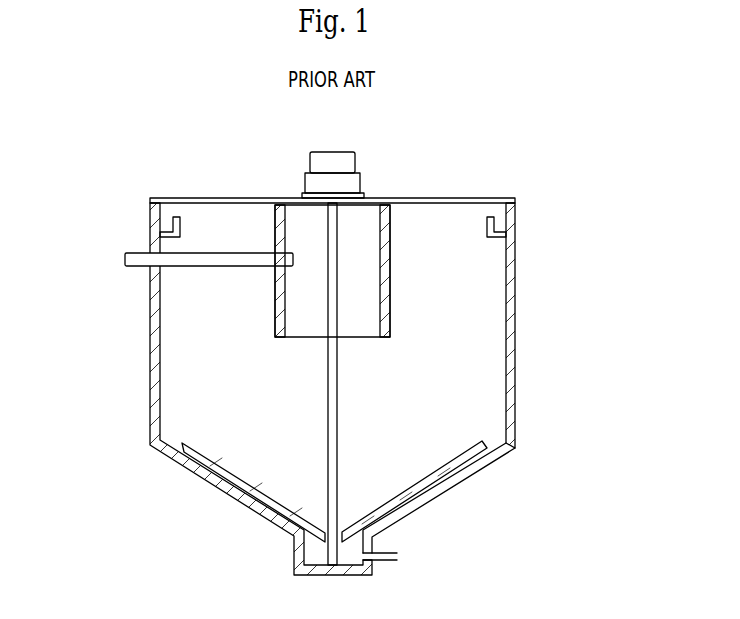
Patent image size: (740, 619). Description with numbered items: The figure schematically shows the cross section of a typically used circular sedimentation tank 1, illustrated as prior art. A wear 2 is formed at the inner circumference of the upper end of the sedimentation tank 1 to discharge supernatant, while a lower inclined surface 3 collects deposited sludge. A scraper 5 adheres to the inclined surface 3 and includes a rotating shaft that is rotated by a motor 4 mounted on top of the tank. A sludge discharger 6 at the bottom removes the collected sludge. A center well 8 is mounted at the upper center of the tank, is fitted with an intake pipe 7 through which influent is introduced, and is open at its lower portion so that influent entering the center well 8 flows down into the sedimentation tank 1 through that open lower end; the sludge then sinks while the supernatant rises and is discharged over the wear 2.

The sedimentation tank 1 is at (516, 377).
The wear 2 is at (497, 222).
The lower inclined surface 3 is at (242, 488).
The motor 4 is at (358, 160).
The scraper 5 is at (443, 495).
The sludge discharger 6 is at (398, 557).
The intake pipe 7 is at (135, 258).
The center well 8 is at (390, 300).